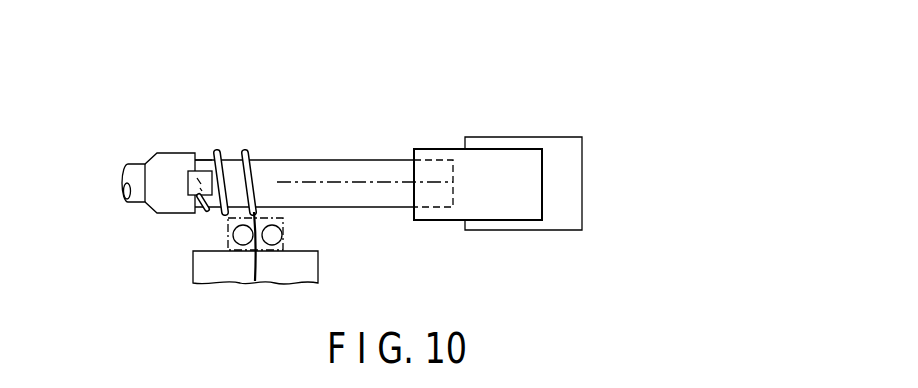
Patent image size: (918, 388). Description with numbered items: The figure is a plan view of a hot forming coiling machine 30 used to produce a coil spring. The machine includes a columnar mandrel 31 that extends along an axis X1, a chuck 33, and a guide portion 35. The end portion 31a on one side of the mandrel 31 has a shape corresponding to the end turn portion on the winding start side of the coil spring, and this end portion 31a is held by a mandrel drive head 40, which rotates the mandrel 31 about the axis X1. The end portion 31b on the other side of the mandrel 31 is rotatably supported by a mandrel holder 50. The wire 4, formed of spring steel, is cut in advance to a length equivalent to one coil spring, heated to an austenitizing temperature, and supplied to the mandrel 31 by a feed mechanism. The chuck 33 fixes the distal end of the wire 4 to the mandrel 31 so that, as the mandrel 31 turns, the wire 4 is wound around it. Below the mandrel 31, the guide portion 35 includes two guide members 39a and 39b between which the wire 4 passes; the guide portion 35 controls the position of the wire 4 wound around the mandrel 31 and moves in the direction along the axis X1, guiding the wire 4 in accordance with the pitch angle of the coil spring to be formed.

The hot forming coiling machine 30 is at (427, 97).
The mandrel 31 is at (337, 160).
The end portion on one side of the mandrel 31a is at (210, 159).
The end portion on the other side of the mandrel 31b is at (450, 190).
The chuck 33 is at (195, 171).
The wire 4 is at (255, 180).
The guide portion 35 is at (332, 252).
The guide member 39a is at (233, 233).
The guide member 39b is at (282, 235).
The mandrel drive head 40 is at (162, 152).
The mandrel holder 50 is at (527, 160).
The axis X1 is at (283, 182).